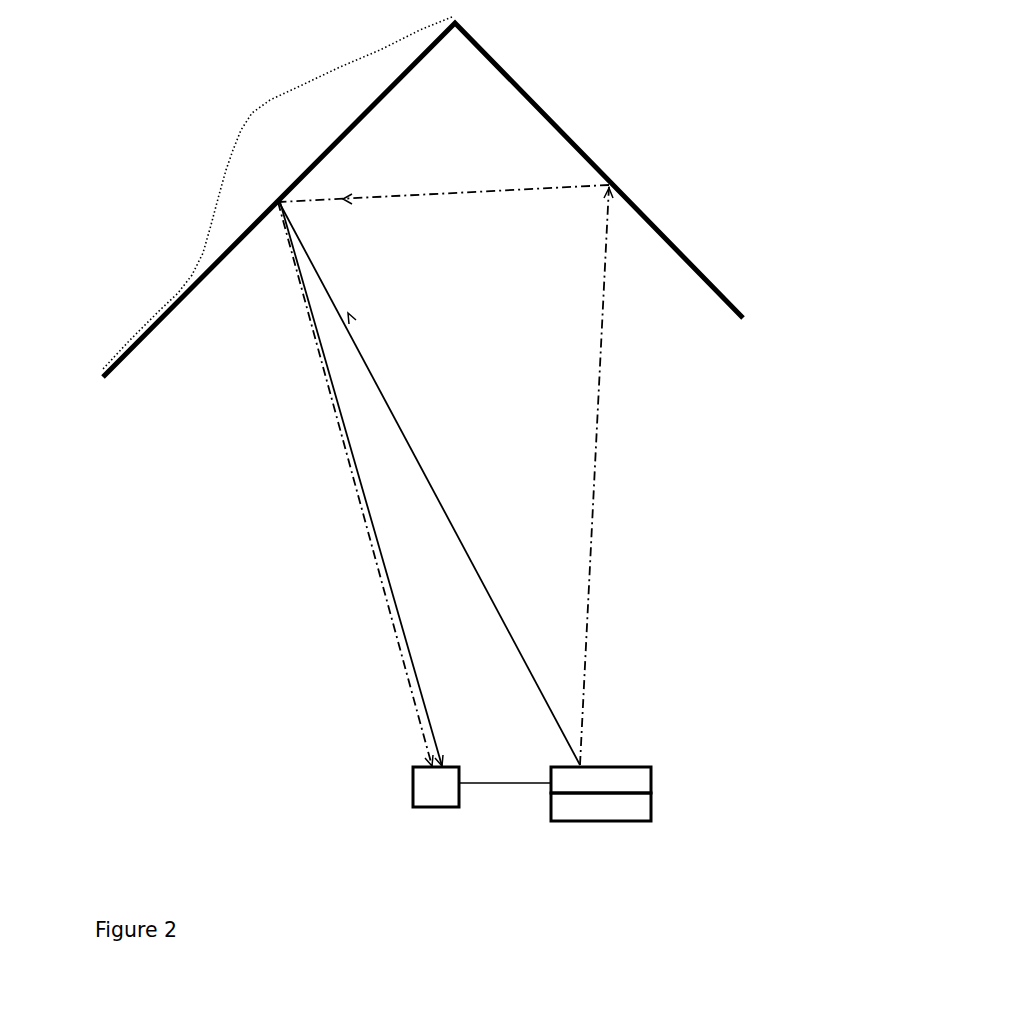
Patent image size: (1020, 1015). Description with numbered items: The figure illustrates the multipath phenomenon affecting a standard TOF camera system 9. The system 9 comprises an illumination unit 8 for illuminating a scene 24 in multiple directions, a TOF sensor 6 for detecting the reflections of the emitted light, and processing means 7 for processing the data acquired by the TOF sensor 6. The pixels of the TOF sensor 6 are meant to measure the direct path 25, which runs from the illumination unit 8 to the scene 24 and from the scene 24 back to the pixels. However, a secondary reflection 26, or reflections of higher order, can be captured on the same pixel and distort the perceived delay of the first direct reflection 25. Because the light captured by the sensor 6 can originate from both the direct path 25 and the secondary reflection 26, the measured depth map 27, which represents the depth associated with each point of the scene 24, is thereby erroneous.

The TOF sensor 6 is at (420, 792).
The processing means 7 is at (643, 808).
The illumination unit 8 is at (638, 778).
The TOF camera system 9 is at (557, 716).
The scene 24 is at (713, 283).
The direct path 25 is at (433, 475).
The secondary reflection 26 is at (340, 433).
The depth map 27 is at (217, 115).